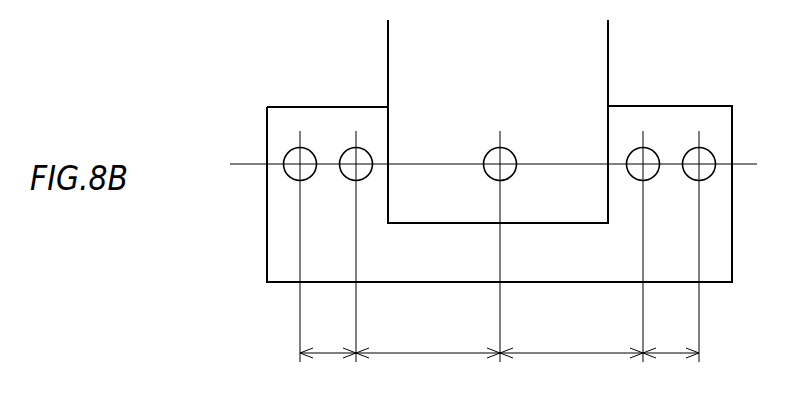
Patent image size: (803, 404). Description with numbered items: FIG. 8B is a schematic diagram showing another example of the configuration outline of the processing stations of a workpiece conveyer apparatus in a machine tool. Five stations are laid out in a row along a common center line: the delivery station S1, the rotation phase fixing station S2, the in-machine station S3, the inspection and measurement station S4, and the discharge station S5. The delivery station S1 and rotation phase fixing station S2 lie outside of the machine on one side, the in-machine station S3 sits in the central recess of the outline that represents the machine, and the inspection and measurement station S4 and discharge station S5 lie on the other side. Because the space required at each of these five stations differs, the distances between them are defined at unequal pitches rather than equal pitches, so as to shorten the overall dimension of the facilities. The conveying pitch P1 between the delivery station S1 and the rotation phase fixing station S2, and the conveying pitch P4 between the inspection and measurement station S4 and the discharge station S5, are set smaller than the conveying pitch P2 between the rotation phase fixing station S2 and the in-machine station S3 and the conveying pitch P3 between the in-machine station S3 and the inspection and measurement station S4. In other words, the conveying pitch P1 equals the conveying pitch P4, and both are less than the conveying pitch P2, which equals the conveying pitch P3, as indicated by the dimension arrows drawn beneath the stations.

The delivery station S1 is at (308, 147).
The rotation phase fixing station S2 is at (362, 147).
The in-machine station S3 is at (508, 147).
The inspection and measurement station S4 is at (652, 147).
The discharge station S5 is at (708, 147).
The conveying pitch P1 is at (328, 340).
The conveying pitch P2 is at (428, 340).
The conveying pitch P3 is at (571, 340).
The conveying pitch P4 is at (671, 340).